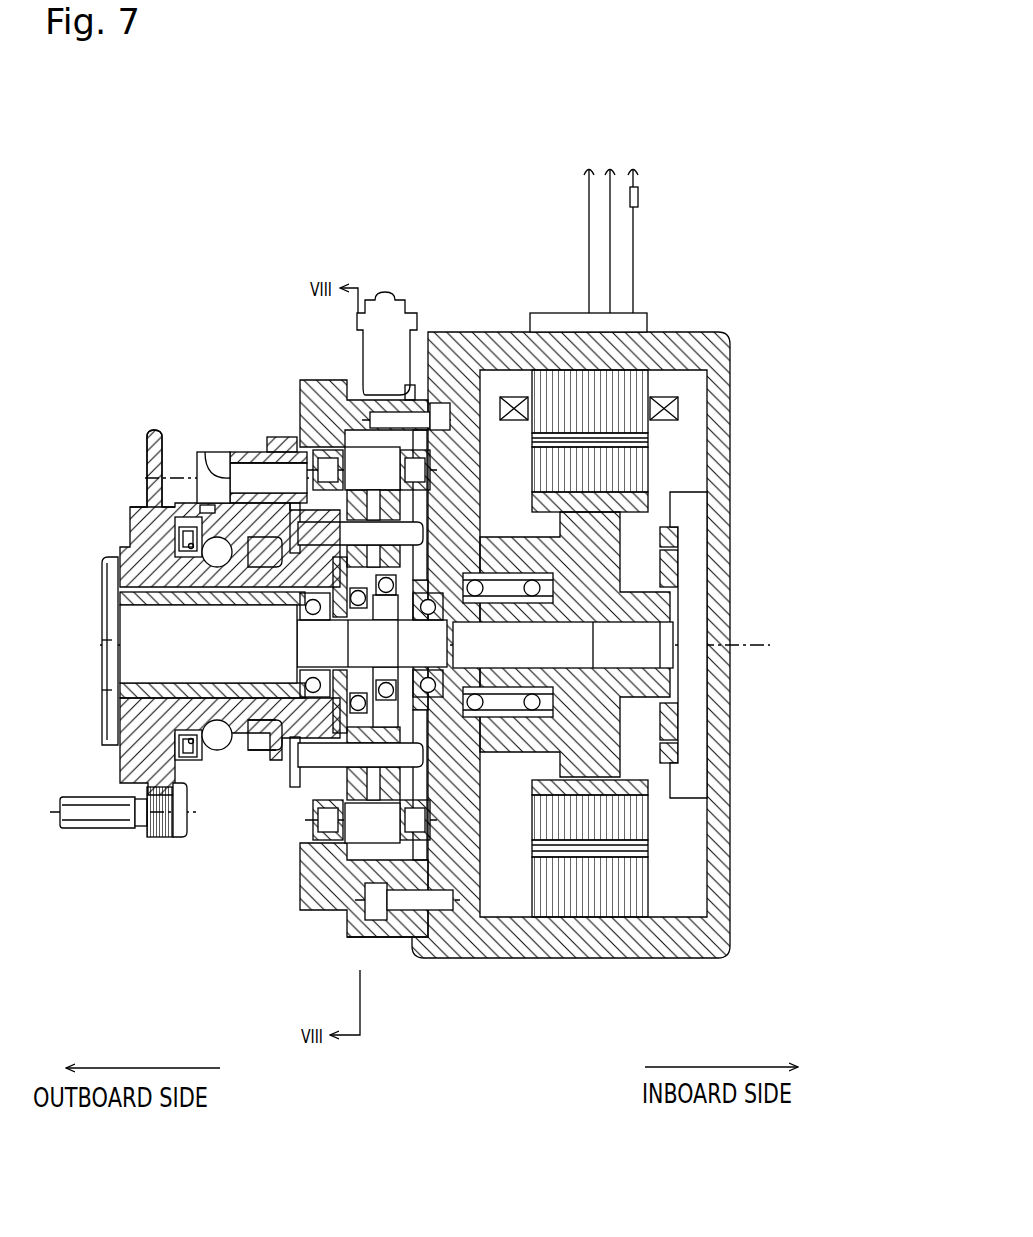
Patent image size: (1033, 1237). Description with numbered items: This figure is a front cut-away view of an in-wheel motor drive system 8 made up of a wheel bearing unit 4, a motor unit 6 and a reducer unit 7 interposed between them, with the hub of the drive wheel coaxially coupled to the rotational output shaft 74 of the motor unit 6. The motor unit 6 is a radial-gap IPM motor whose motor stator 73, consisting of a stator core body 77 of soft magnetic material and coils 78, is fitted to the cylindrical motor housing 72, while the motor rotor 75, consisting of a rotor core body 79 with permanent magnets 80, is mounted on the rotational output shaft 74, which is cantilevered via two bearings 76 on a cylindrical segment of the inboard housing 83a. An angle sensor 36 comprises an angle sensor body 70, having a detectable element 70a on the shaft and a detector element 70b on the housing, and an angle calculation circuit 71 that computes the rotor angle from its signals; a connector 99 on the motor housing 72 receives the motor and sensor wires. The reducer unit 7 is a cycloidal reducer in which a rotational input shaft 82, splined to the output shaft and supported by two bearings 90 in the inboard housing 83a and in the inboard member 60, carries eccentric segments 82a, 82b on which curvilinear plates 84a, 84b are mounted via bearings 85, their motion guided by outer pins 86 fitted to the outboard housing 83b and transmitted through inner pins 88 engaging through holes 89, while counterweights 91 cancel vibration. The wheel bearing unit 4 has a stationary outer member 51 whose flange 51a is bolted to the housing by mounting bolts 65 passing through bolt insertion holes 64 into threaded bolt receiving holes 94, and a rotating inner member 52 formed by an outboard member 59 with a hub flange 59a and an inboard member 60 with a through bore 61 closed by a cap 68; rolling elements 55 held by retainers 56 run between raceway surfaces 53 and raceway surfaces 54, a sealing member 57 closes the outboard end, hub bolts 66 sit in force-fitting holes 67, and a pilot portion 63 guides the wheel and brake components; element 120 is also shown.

The in-wheel motor drive system 8 is at (484, 182).
The wheel bearing unit 4 is at (305, 268).
The reducer unit 7 is at (312, 268).
The motor unit 6 is at (750, 978).
The connector 99 is at (545, 312).
The motor housing 72 is at (508, 332).
The motor stator 73 is at (746, 252).
The stator core body 77 is at (650, 383).
The coils 78 is at (680, 403).
The angle calculation circuit 71 is at (639, 199).
The angle sensor 36 is at (834, 425).
The angle sensor body 70 is at (788, 447).
The detectable element 70a is at (700, 560).
The detector element 70b is at (668, 535).
The rotational output shaft 74 is at (700, 712).
The motor rotor 75 is at (517, 502).
The bearings 76 is at (485, 720).
The rotor core body 79 is at (543, 464).
The permanent magnets 80 is at (545, 445).
The rotational input shaft 82 is at (590, 680).
The eccentric segment 82a is at (385, 628).
The eccentric segment 82b is at (360, 658).
The inboard housing 83a is at (455, 478).
The outboard housing 83b is at (318, 500).
The curvilinear plate 84a is at (360, 872).
The curvilinear plate 84b is at (380, 770).
The bearings 85 is at (345, 695).
The outer pins 86 is at (342, 430).
The inner pins 88 is at (323, 535).
The through holes 89 is at (332, 452).
The bearings 90 is at (317, 700).
The counterweights 91 is at (270, 569).
The bolt receiving holes 94 is at (262, 452).
The outer member 51 is at (190, 520).
The flange 51a is at (240, 455).
The inner member 52 is at (50, 567).
The outboard member 59 is at (150, 562).
The inboard member 60 is at (200, 597).
The hub flange 59a is at (152, 432).
The brake disc mounting portion 120 is at (156, 430).
The pilot portion 63 is at (103, 557).
The through bore 61 is at (108, 645).
The cap 68 is at (104, 684).
The bolt insertion holes 64 is at (210, 505).
The mounting bolts 65 is at (215, 452).
The hub bolts 66 is at (95, 822).
The force-fitting holes 67 is at (145, 832).
The raceway surfaces 53 is at (232, 752).
The raceway surfaces 54 is at (240, 722).
The rolling elements 55 is at (265, 568).
The retainer 56 is at (172, 758).
The sealing member 57 is at (168, 731).